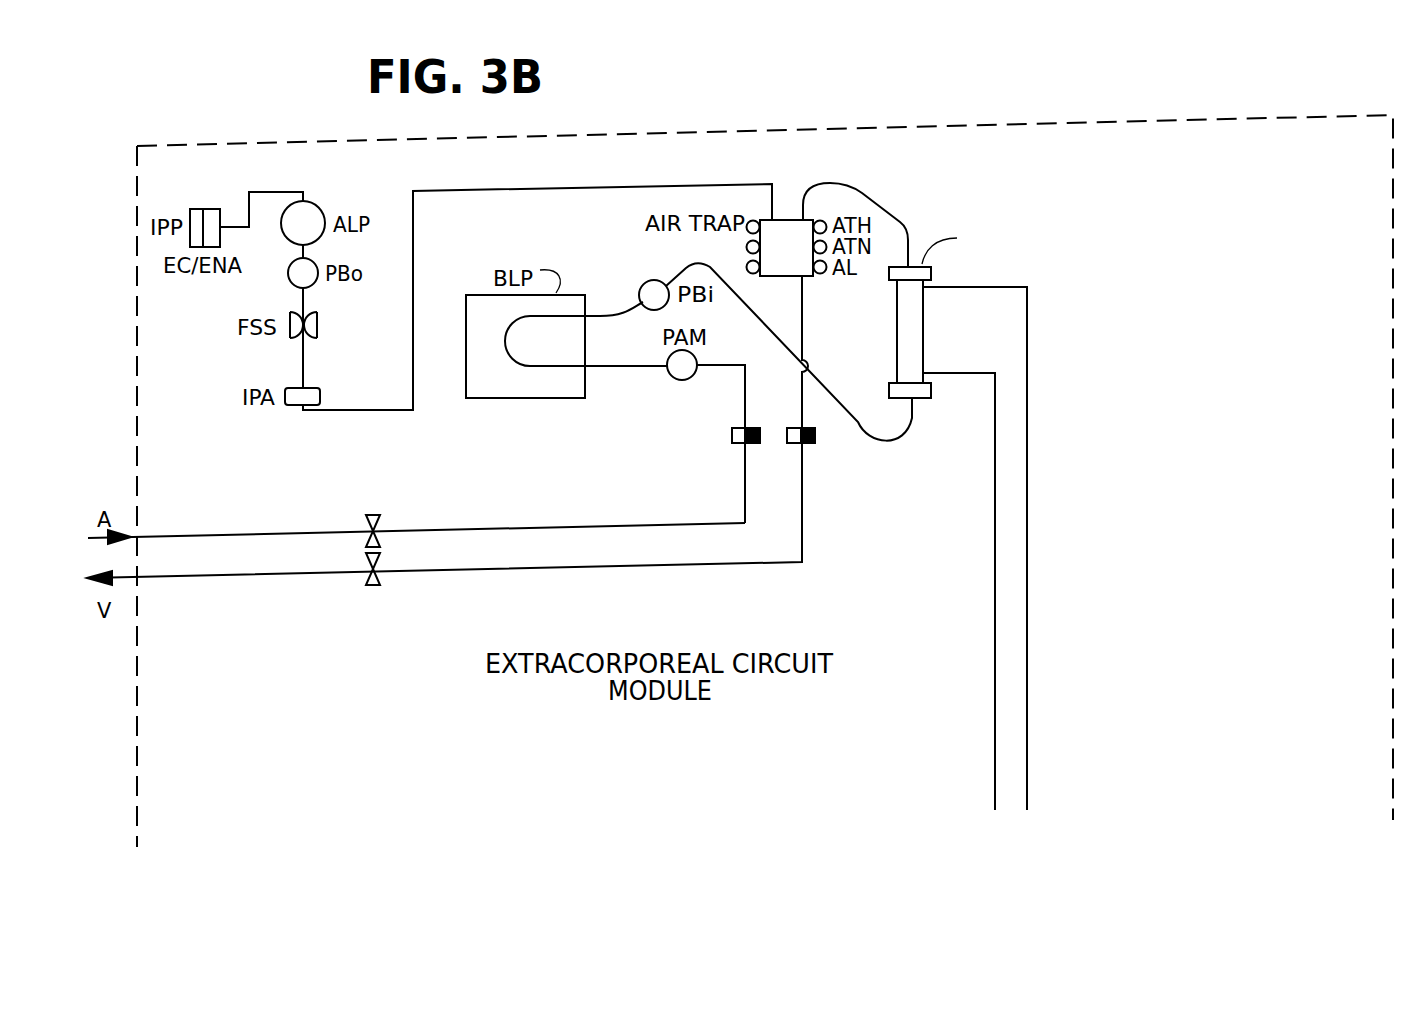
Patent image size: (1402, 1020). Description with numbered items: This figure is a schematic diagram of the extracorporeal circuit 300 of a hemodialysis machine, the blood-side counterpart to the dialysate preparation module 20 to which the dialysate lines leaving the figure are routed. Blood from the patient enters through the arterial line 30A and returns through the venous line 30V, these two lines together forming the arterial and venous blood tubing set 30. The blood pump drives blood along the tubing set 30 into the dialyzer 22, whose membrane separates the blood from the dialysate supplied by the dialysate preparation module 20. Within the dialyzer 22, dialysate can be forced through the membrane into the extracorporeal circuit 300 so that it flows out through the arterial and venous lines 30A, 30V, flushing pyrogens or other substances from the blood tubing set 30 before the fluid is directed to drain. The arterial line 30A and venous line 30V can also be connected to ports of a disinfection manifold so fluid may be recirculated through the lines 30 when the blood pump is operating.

The arterial and venous blood tubing set 30 is at (878, 199).
The dialyzer 22 is at (897, 342).
The dialysate preparation module 20 is at (985, 567).
The extracorporeal circuit 300 is at (682, 486).
The arterial line 30A is at (266, 533).
The venous line 30V is at (802, 530).